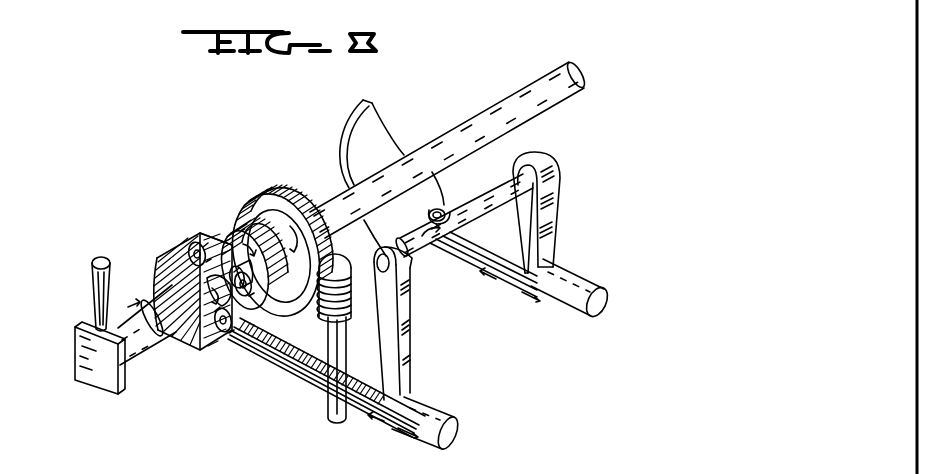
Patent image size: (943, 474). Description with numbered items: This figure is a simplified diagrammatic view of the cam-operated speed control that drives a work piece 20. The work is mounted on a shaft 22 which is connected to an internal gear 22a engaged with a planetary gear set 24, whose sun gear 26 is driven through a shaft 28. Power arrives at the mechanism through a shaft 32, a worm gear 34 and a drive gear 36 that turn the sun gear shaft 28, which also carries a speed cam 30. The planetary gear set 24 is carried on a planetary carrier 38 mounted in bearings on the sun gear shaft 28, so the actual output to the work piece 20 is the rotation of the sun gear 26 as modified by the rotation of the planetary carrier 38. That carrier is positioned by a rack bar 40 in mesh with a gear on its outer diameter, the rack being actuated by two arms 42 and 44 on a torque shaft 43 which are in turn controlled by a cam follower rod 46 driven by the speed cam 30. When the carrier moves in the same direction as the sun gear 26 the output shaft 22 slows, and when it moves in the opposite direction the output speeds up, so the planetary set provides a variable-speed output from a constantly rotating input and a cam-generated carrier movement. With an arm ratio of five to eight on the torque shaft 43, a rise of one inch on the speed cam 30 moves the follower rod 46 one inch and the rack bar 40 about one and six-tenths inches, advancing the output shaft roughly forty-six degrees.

The work piece 20 is at (76, 364).
The shaft 22 is at (177, 336).
The internal gear 22a is at (160, 268).
The planetary gear set 24 is at (240, 320).
The sun gear 26 is at (173, 253).
The shaft 28 is at (493, 113).
The speed cam 30 is at (377, 133).
The shaft 32 is at (331, 416).
The worm gear 34 is at (338, 261).
The drive gear 36 is at (305, 207).
The planetary carrier 38 is at (224, 243).
The rack bar 40 is at (307, 351).
The arm 42 is at (405, 353).
The torque shaft 43 is at (444, 240).
The arm 44 is at (552, 218).
The cam follower rod 46 is at (572, 282).